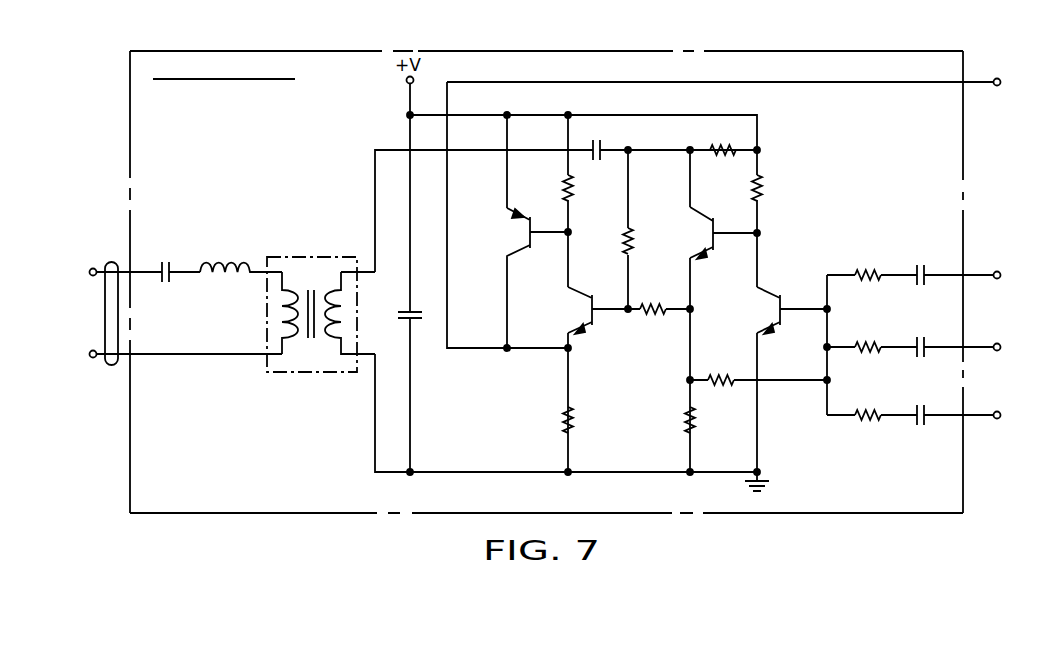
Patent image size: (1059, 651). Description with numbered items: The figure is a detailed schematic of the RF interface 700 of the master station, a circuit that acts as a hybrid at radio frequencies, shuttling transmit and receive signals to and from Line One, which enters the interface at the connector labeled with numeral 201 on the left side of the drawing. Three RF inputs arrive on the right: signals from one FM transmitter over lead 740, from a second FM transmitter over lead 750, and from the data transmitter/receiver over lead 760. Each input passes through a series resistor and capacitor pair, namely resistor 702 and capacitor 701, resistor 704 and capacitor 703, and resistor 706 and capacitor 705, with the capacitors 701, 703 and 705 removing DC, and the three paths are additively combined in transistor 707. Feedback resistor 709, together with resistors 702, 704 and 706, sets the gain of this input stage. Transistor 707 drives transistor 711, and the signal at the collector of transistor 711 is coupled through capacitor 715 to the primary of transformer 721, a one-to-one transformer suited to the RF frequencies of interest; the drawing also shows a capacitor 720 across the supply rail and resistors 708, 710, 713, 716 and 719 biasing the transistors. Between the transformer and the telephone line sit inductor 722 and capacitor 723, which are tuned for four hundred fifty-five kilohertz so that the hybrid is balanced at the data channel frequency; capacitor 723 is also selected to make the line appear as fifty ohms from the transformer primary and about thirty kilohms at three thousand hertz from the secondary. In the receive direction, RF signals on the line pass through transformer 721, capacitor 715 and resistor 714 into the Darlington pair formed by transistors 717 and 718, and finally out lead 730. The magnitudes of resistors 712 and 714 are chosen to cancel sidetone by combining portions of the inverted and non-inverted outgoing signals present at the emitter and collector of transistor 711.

The RF interface 700 is at (352, 51).
The telephone line 1 201 is at (108, 258).
The capacitor 723 is at (163, 261).
The inductor 722 is at (225, 251).
The transformer 721 is at (285, 256).
The capacitor 720 is at (400, 312).
The lead 730 is at (976, 82).
The transistor 718 is at (512, 278).
The resistor 716 is at (580, 189).
The capacitor 715 is at (593, 142).
The resistor 710 is at (730, 141).
The resistor 708 is at (789, 188).
The resistor 714 is at (651, 219).
The transistor 711 is at (701, 233).
The transistor 717 is at (572, 310).
The resistor 712 is at (654, 298).
The transistor 707 is at (765, 310).
The feedback resistor 709 is at (722, 355).
The resistor 719 is at (536, 421).
The resistor 713 is at (658, 421).
The resistor 702 is at (872, 253).
The capacitor 701 is at (947, 256).
The lead 740 is at (975, 275).
The resistor 704 is at (872, 323).
The capacitor 703 is at (947, 326).
The lead 750 is at (975, 347).
The resistor 706 is at (872, 392).
The capacitor 705 is at (947, 395).
The lead 760 is at (975, 415).